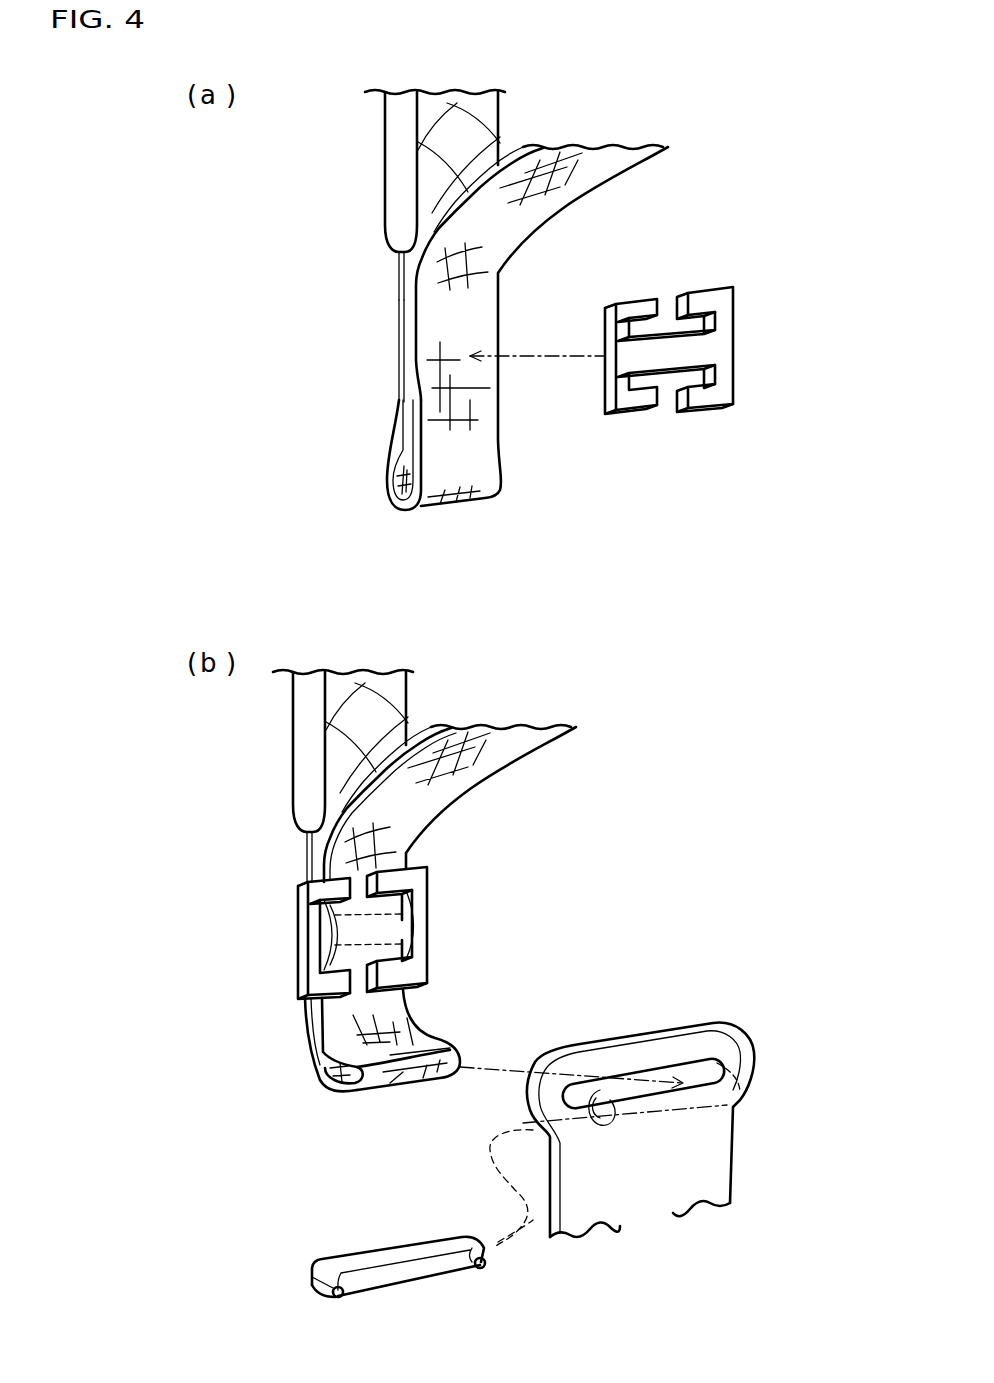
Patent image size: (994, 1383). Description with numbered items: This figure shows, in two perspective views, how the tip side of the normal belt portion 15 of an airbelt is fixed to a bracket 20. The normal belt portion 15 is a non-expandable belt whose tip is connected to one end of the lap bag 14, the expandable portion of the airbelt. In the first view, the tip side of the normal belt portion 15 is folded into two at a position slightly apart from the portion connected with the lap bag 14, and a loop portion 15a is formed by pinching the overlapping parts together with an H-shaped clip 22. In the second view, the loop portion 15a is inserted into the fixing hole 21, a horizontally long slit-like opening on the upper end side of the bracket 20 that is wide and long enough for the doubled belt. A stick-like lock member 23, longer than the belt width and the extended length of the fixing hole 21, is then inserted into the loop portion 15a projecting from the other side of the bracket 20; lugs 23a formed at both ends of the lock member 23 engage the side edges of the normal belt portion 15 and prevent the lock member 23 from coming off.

The lap bag 14 is at (400, 158).
The normal belt portion 15 is at (566, 207).
The loop portion 15a is at (382, 513).
The bracket 20 is at (723, 1147).
The fixing hole 21 is at (667, 1060).
The clip 22 is at (763, 344).
The lock member 23 is at (403, 1273).
The lug 23a is at (318, 1298).